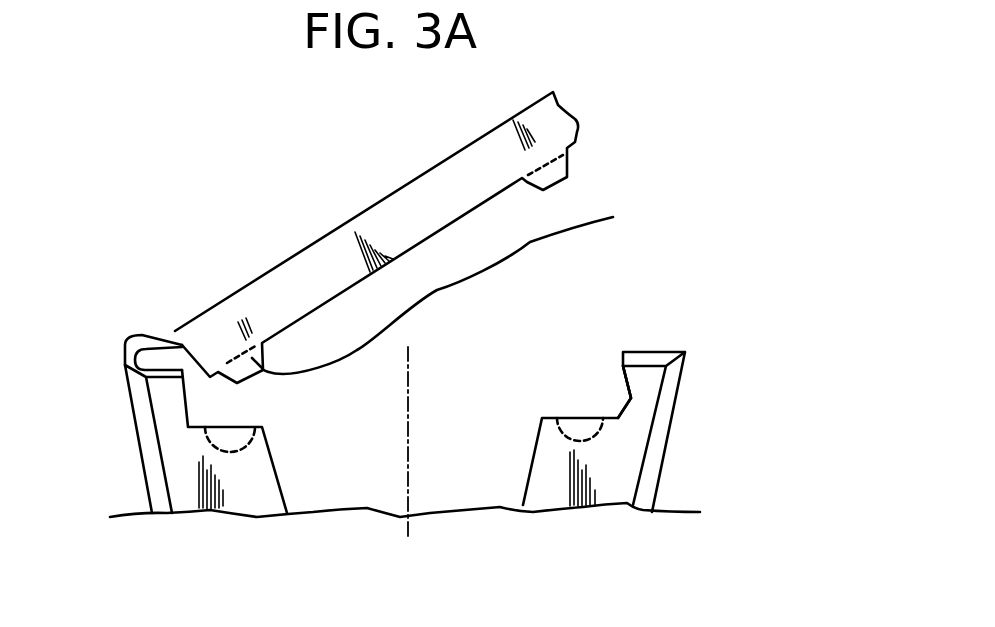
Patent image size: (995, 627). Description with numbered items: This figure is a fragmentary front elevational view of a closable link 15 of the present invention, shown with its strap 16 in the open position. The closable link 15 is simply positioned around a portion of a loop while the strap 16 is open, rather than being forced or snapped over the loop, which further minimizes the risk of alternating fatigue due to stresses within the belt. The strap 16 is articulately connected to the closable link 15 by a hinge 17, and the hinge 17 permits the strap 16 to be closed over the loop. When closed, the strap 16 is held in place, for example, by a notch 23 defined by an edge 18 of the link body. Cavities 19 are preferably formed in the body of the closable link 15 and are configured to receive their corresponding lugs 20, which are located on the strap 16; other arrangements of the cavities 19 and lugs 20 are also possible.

The closable link 15 is at (603, 475).
The strap 16 is at (535, 138).
The hinge 17 is at (143, 335).
The edge 18 is at (606, 366).
The cavities 19 is at (243, 427).
The lugs 20 is at (566, 178).
The notch 23 is at (623, 407).